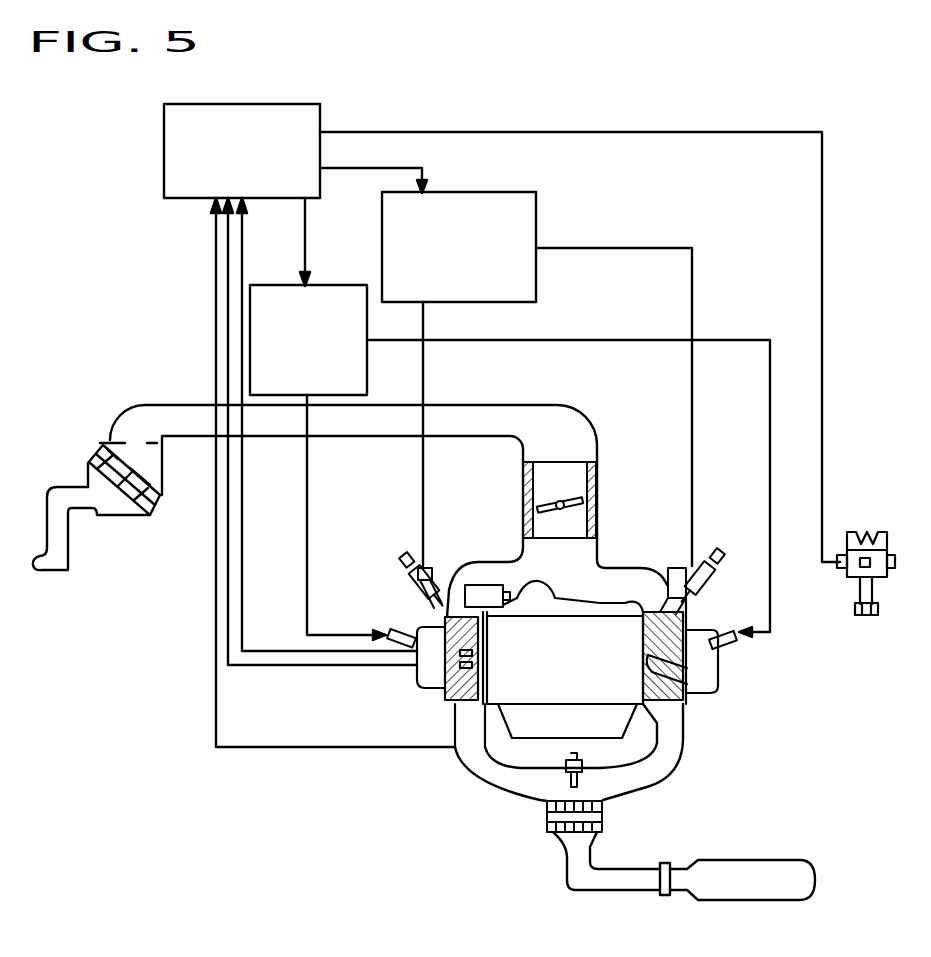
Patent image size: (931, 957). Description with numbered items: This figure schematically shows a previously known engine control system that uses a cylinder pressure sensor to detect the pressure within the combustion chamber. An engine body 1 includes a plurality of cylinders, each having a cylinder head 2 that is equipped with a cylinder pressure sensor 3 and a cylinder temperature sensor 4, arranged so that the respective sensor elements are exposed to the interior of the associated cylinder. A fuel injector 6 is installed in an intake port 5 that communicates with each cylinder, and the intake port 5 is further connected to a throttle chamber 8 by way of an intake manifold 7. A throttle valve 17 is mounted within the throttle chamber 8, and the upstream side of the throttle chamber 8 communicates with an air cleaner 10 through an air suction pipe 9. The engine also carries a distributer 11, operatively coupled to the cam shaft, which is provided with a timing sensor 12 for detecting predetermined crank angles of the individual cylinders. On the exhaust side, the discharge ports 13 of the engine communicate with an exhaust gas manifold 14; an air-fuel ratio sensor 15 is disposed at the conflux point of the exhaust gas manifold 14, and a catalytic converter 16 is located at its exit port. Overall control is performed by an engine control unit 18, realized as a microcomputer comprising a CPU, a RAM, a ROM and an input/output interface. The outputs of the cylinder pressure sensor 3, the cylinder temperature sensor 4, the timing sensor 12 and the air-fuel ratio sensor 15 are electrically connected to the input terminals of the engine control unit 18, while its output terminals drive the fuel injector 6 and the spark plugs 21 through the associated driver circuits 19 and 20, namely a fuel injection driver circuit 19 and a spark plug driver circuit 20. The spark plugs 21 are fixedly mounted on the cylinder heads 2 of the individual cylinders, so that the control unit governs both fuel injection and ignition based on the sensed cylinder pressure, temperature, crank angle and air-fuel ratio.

The engine body 1 is at (580, 638).
The cylinder head 2 is at (440, 687).
The cylinder pressure sensor 3 is at (447, 617).
The cylinder temperature sensor 4 is at (450, 693).
The intake port 5 is at (457, 593).
The fuel injector 6 is at (417, 592).
The intake manifold 7 is at (580, 559).
The throttle chamber 8 is at (560, 500).
The air suction pipe 9 is at (524, 416).
The air cleaner 10 is at (98, 454).
The distributer 11 is at (857, 598).
The timing sensor 12 is at (842, 538).
The discharge ports 13 is at (683, 727).
The exhaust gas manifold 14 is at (653, 765).
The air-fuel ratio sensor 15 is at (600, 762).
The catalytic converter 16 is at (547, 816).
The throttle valve 17 is at (543, 508).
The engine control unit (ECU) 18 is at (164, 157).
The driver circuit 19 is at (536, 200).
The driver circuit 20 is at (342, 285).
The spark plugs 21 is at (395, 630).